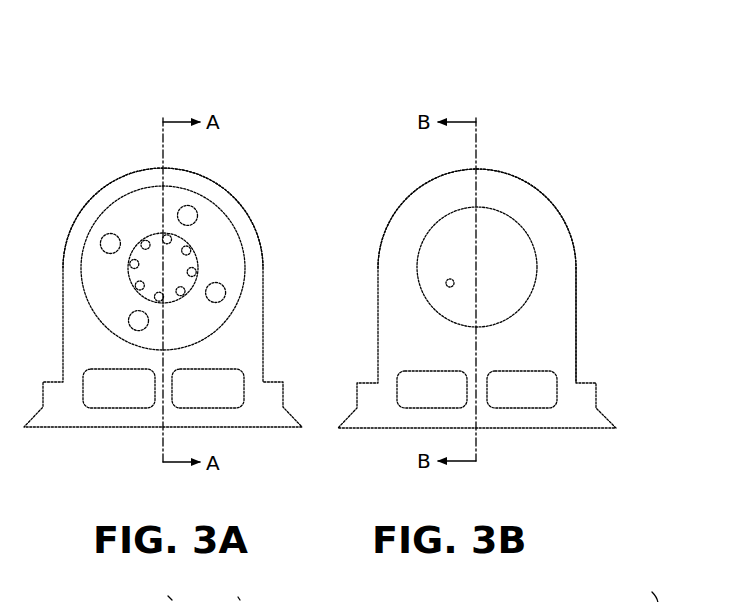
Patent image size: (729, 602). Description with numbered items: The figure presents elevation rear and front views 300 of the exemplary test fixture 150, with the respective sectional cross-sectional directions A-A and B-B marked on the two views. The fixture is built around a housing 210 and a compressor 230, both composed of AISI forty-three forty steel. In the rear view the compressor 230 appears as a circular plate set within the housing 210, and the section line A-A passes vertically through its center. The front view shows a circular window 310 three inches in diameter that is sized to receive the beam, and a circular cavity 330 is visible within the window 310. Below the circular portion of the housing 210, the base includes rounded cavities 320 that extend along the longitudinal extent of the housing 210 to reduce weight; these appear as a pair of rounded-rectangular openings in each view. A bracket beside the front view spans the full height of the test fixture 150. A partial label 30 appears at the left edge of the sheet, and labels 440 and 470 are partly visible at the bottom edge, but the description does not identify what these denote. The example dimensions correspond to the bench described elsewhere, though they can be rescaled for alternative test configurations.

In FIG. 3A, the motor housing 30 is at (152, 286).
In FIG. 3B, the test fixture 150 is at (615, 167).
In FIG. 3A, the housing 210 is at (245, 208).
In FIG. 3B, the housing 210 is at (388, 210).
In FIG. 3A, the compressor 230 is at (243, 243).
In FIG. 3B, the elevation rear and front views 300 is at (519, 101).
In FIG. 3B, the circular window 310 is at (522, 228).
In FIG. 3B, the rounded cavities 320 is at (546, 409).
In FIG. 3B, the circular cavity 330 is at (449, 285).
In FIG. 3A, the connector 440 is at (193, 594).
In FIG. 3A, the terminal 470 is at (260, 594).